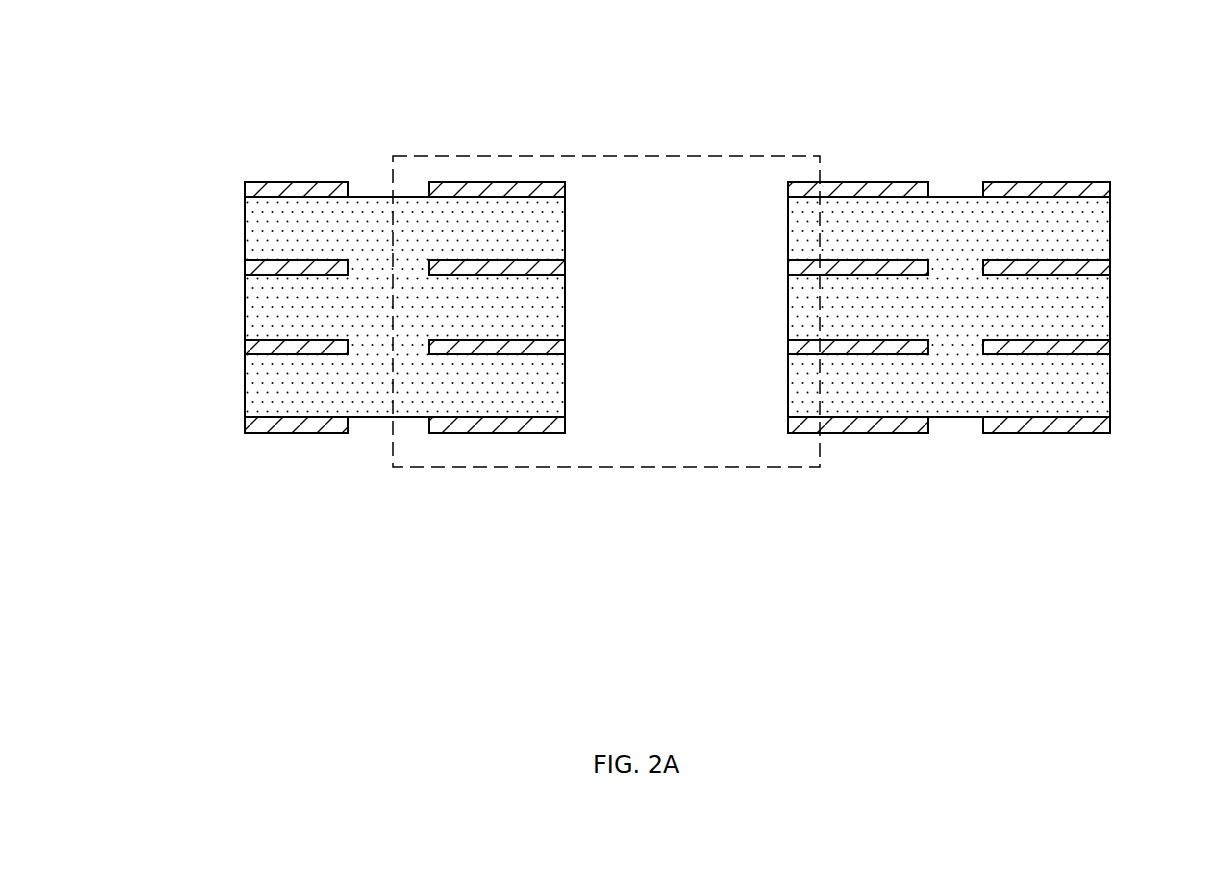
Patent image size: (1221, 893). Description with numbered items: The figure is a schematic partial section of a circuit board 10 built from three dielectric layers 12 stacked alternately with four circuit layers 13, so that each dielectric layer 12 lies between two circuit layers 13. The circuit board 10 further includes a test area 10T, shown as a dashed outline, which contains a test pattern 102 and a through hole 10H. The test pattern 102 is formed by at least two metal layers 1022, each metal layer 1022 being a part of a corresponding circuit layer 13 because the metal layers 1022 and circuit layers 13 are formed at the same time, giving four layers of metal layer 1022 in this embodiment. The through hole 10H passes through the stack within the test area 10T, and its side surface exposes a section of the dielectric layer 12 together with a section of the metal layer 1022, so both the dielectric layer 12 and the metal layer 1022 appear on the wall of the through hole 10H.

The circuit board 10 is at (668, 309).
The through hole 10H is at (633, 293).
The test area 10T is at (792, 468).
The dielectric layer 12 is at (262, 231).
The circuit layer 13 is at (258, 192).
The metal layer 1022 is at (564, 319).
The test pattern 102 is at (468, 190).